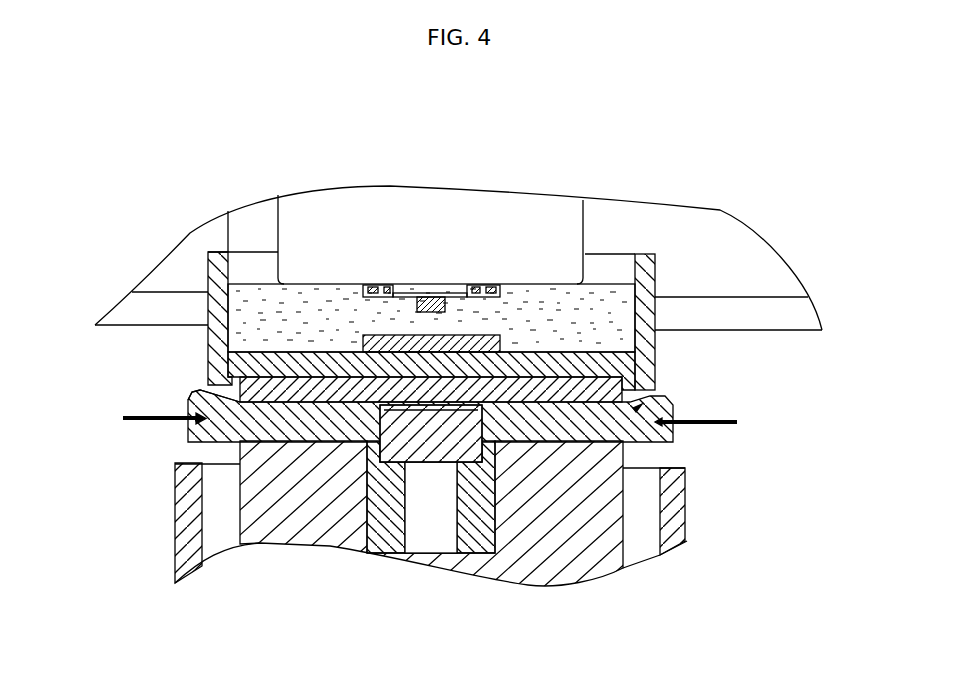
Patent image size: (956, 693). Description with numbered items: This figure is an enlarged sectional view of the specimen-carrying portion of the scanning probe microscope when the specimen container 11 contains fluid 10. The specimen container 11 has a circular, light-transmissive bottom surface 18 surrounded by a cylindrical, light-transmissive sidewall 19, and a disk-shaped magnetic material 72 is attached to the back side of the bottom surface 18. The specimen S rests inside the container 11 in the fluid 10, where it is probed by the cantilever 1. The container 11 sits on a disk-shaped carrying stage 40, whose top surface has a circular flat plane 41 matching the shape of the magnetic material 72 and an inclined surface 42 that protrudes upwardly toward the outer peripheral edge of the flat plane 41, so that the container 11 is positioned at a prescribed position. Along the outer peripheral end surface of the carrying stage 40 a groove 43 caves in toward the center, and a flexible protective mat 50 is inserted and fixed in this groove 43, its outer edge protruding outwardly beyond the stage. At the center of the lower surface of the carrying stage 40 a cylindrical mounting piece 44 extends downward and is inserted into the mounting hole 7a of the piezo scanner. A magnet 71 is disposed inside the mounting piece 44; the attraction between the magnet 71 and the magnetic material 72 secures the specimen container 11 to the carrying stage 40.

The cantilever 1 is at (421, 300).
The specimen S is at (392, 335).
The fluid 10 is at (552, 302).
The specimen container 11 is at (847, 200).
The bottom surface 18 is at (563, 363).
The sidewall 19 is at (640, 298).
The magnetic material 72 is at (627, 380).
The inclined surface 42 is at (672, 442).
The groove 43 is at (189, 403).
The protective mat 50 is at (137, 423).
The carrying stage 40 is at (258, 442).
The flat plane 41 is at (680, 477).
The mounting piece 44 is at (387, 530).
The mounting hole 7a is at (430, 520).
The magnet 71 is at (500, 462).